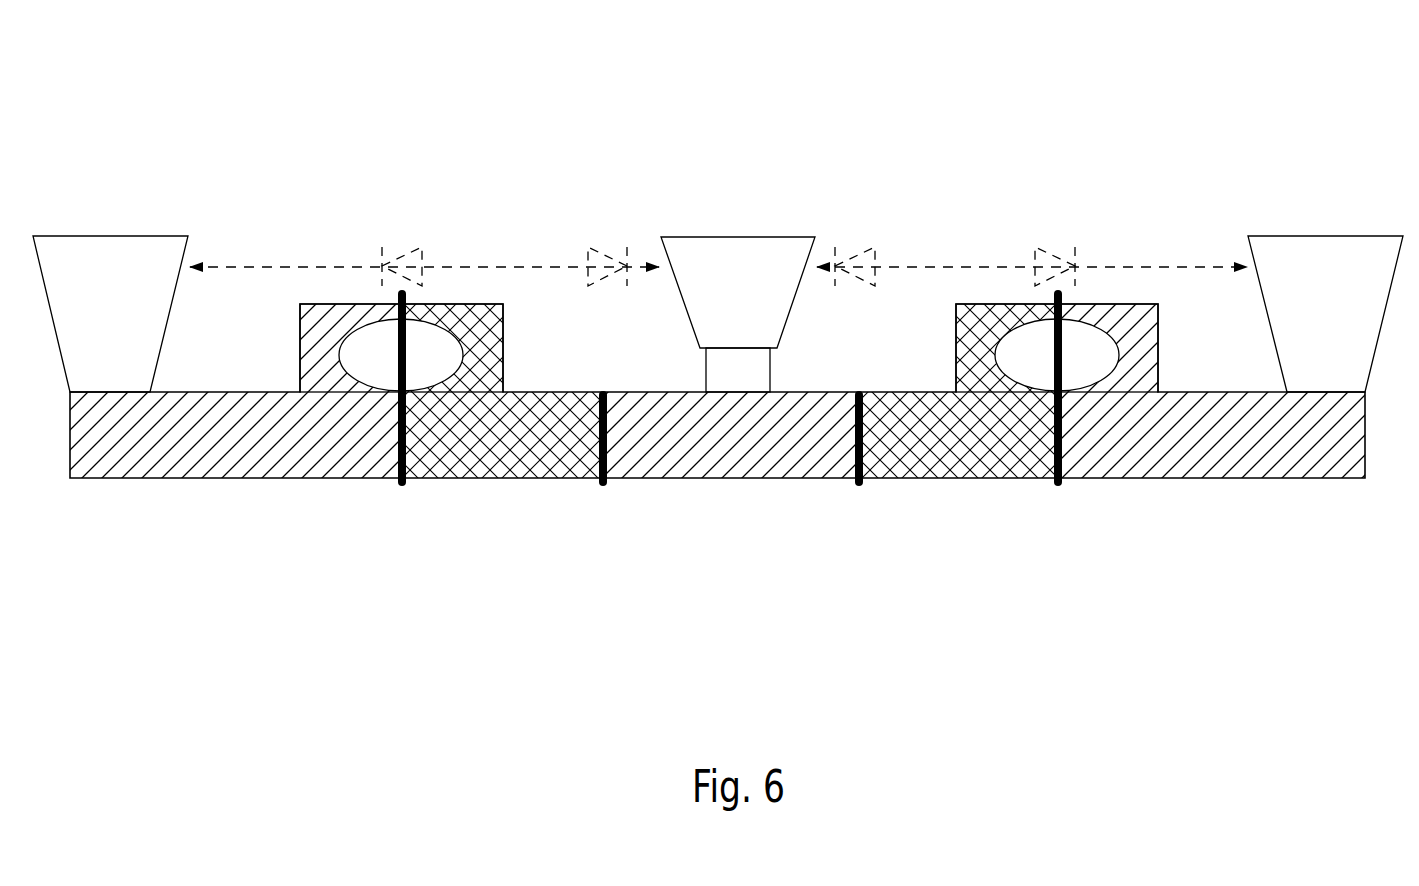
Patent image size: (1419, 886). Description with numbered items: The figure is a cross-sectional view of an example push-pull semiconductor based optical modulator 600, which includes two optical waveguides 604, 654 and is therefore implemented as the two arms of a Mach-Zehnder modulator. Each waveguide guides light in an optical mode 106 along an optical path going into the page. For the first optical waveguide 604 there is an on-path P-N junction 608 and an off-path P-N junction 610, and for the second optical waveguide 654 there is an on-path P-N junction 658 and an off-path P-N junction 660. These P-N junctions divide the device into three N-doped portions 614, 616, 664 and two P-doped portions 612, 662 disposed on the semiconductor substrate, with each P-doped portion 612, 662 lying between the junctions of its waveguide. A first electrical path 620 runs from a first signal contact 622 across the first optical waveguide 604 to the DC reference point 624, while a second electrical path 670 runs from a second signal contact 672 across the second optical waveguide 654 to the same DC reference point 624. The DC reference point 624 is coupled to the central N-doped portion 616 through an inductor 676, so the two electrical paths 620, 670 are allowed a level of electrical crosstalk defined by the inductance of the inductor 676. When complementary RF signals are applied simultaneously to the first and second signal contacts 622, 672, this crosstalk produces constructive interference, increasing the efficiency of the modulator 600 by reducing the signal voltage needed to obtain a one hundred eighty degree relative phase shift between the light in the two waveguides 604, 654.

The push-pull semiconductor based optical modulator 600 is at (1291, 73).
The optical mode 106 is at (729, 355).
The first optical waveguide 604 is at (511, 302).
The on-path P-N junction 608 is at (410, 296).
The off-path P-N junction 610 is at (605, 382).
The P-doped portion 612 is at (502, 391).
The N-doped portion 614 is at (236, 391).
The N-doped portion 616 is at (731, 435).
The first electrical path 620 is at (503, 246).
The first signal contact 622 is at (110, 314).
The DC reference point 624 is at (738, 292).
The second optical waveguide 654 is at (1165, 302).
The on-path P-N junction 658 is at (1066, 297).
The off-path P-N junction 660 is at (861, 382).
The P-doped portion 662 is at (958, 391).
The N-doped portion 664 is at (1211, 391).
The second electrical path 670 is at (953, 246).
The second signal contact 672 is at (1325, 314).
The inductor 676 is at (738, 370).